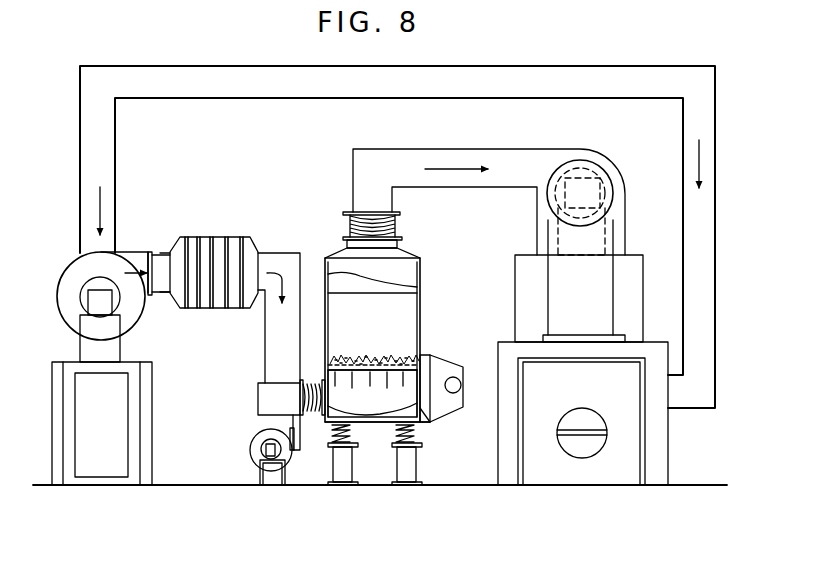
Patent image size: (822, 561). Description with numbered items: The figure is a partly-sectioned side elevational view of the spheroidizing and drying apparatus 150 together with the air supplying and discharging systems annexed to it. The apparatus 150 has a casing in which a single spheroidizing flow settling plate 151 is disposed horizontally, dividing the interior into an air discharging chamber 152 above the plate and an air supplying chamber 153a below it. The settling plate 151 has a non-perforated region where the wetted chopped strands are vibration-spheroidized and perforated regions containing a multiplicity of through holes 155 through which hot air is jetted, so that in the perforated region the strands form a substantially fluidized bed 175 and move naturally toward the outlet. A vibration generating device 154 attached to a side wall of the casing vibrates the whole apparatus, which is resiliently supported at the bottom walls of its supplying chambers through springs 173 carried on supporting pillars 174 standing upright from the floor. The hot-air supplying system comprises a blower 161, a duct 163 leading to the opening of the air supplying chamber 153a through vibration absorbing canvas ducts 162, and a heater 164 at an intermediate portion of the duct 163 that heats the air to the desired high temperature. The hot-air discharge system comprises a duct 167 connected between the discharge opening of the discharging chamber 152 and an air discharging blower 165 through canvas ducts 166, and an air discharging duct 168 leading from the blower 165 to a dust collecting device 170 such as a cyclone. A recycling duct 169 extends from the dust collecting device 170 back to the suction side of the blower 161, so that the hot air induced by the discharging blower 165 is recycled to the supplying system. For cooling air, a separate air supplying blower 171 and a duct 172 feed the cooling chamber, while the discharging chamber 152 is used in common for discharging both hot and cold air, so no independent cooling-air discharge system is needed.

The spheroidizing and drying apparatus 150 is at (432, 250).
The spheroidizing flow settling plate 151 is at (372, 393).
The air discharging chamber 152 is at (417, 310).
The air supplying chamber 153a is at (423, 421).
The vibration generating device 154 is at (435, 360).
The through holes 155 is at (350, 357).
The blower 161 is at (77, 267).
The vibration absorbing canvas ducts 162 is at (291, 397).
The duct 163 is at (267, 343).
The heater 164 is at (218, 237).
The air discharging blower 165 is at (620, 189).
The canvas ducts 166 is at (347, 230).
The duct 167 is at (535, 149).
The air discharging duct 168 is at (613, 242).
The recycling duct 169 is at (305, 99).
The dust collecting device 170 is at (638, 447).
The air supplying blower 171 is at (258, 437).
The duct 172 is at (300, 452).
The springs 173 is at (397, 432).
The supporting pillars 174 is at (414, 465).
The fluidized bed 175 is at (378, 353).